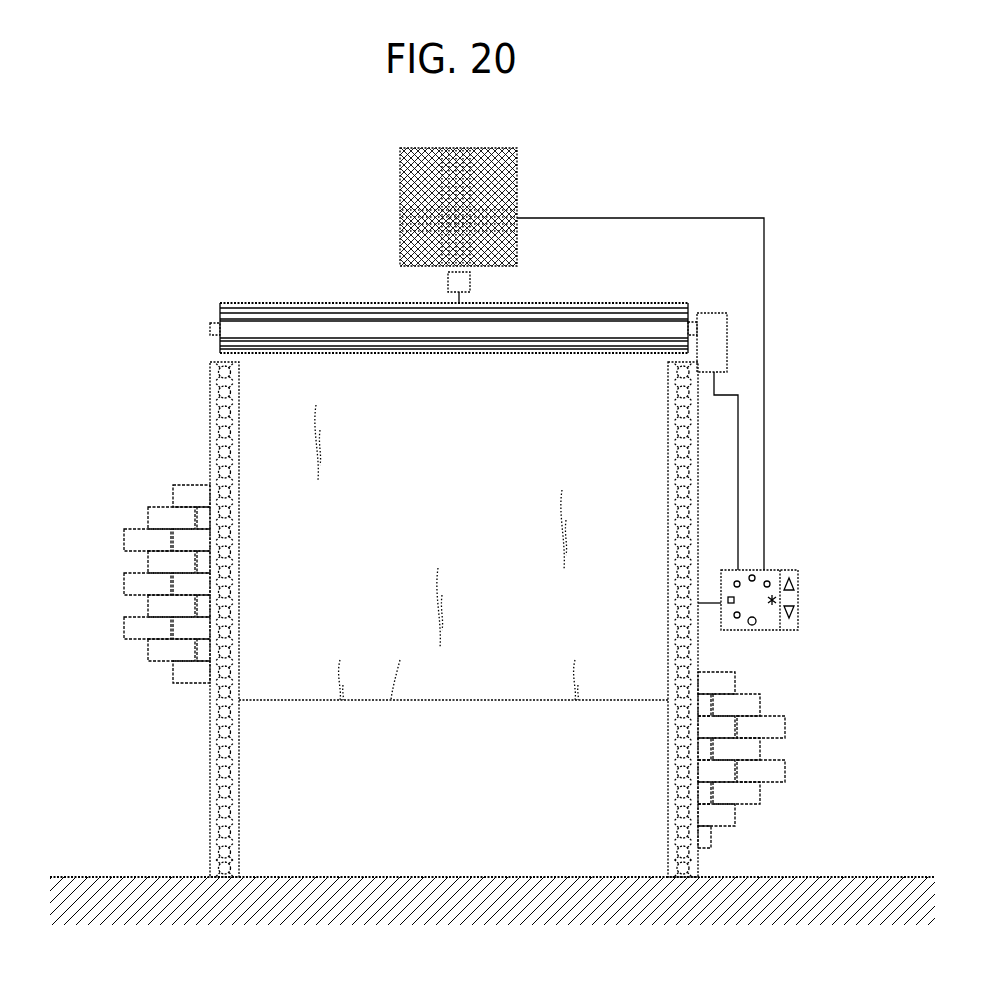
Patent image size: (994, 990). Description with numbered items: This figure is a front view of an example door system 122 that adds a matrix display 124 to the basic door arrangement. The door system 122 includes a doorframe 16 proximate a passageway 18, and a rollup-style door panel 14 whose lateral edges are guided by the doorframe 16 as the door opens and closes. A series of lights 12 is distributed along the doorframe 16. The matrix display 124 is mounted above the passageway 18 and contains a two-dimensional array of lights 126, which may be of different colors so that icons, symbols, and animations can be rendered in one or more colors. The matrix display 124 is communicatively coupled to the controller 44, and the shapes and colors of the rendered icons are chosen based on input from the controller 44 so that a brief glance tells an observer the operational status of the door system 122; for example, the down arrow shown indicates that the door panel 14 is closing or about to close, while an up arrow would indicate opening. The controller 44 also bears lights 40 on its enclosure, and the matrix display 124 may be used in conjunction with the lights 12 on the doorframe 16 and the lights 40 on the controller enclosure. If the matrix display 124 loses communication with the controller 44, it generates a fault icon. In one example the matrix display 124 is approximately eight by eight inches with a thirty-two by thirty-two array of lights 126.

The door system 122 is at (148, 256).
The matrix display 124 is at (456, 203).
The lights 126 is at (517, 237).
The doorframe 16 is at (240, 549).
The lights 12 is at (230, 767).
The door panel 14 is at (391, 700).
The passageway 18 is at (472, 825).
The lights 40 is at (771, 605).
The controller 44 is at (800, 598).